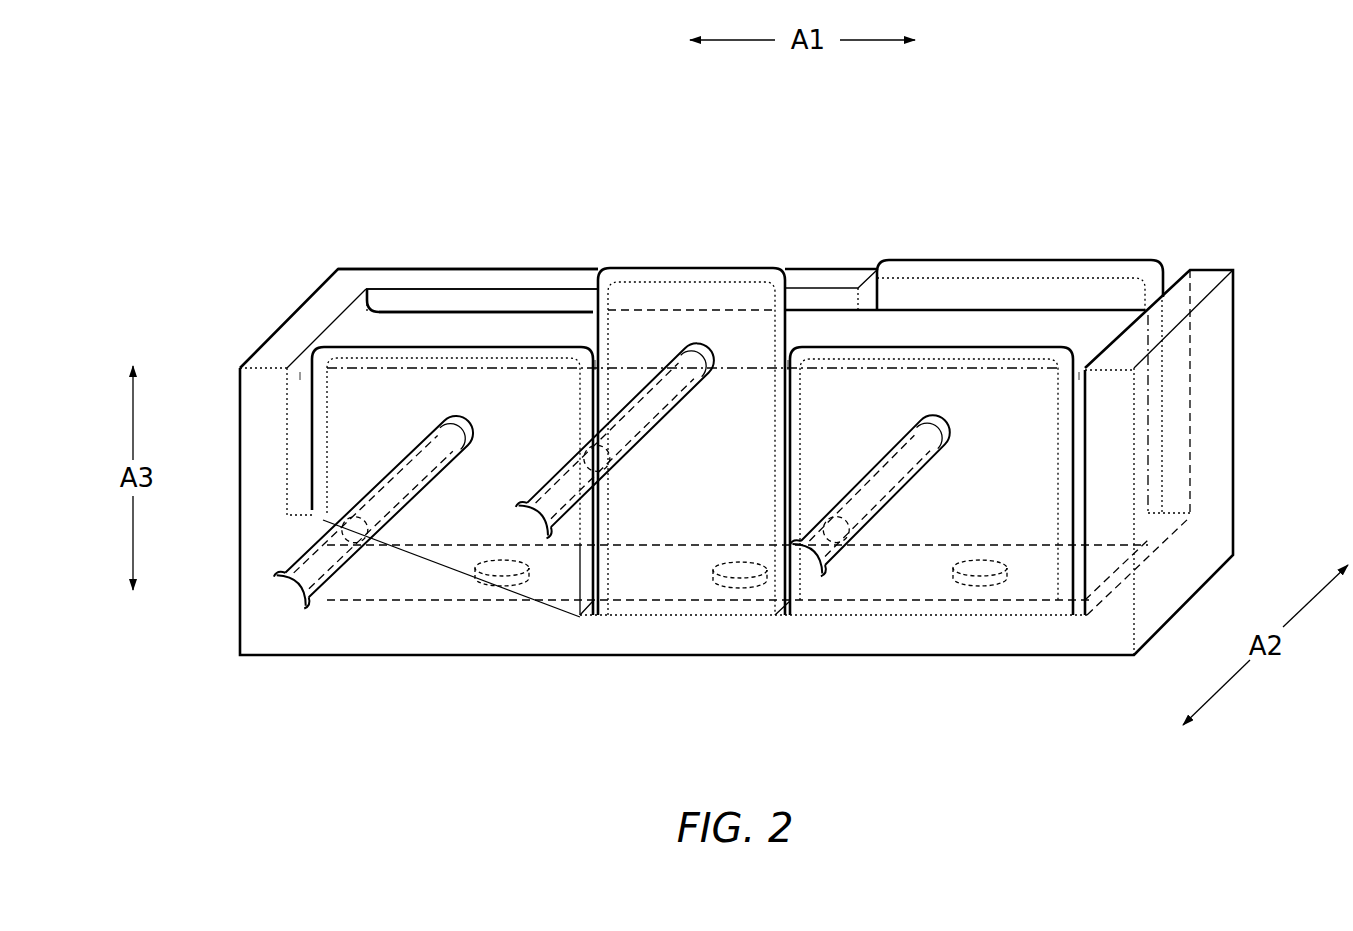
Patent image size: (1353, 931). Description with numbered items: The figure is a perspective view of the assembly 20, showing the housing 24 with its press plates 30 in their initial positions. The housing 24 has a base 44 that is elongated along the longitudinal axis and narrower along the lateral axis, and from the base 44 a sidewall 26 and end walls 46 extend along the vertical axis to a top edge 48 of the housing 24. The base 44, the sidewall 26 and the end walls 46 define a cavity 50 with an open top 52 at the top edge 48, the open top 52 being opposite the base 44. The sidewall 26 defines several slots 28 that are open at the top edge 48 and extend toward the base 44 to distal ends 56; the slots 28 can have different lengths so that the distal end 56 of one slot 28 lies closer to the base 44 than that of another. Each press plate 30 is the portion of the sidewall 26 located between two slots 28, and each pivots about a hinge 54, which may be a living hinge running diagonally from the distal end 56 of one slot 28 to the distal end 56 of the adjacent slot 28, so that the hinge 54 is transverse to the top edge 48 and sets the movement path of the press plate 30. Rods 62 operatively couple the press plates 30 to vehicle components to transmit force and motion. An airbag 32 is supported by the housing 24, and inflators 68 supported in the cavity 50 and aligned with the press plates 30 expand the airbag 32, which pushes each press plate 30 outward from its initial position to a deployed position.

The assembly 20 is at (181, 228).
The housing 24 is at (1215, 440).
The sidewall 26 is at (527, 292).
The slot 28 is at (302, 378).
The press plate 30 is at (987, 298).
The airbag 32 is at (482, 338).
The base 44 is at (1060, 635).
The end wall 46 is at (272, 348).
The top edge 48 is at (836, 287).
The cavity 50 is at (388, 302).
The open top 52 is at (421, 258).
The hinge 54 is at (432, 560).
The distal end 56 is at (437, 345).
The rod 62 is at (407, 456).
The inflator 68 is at (500, 568).